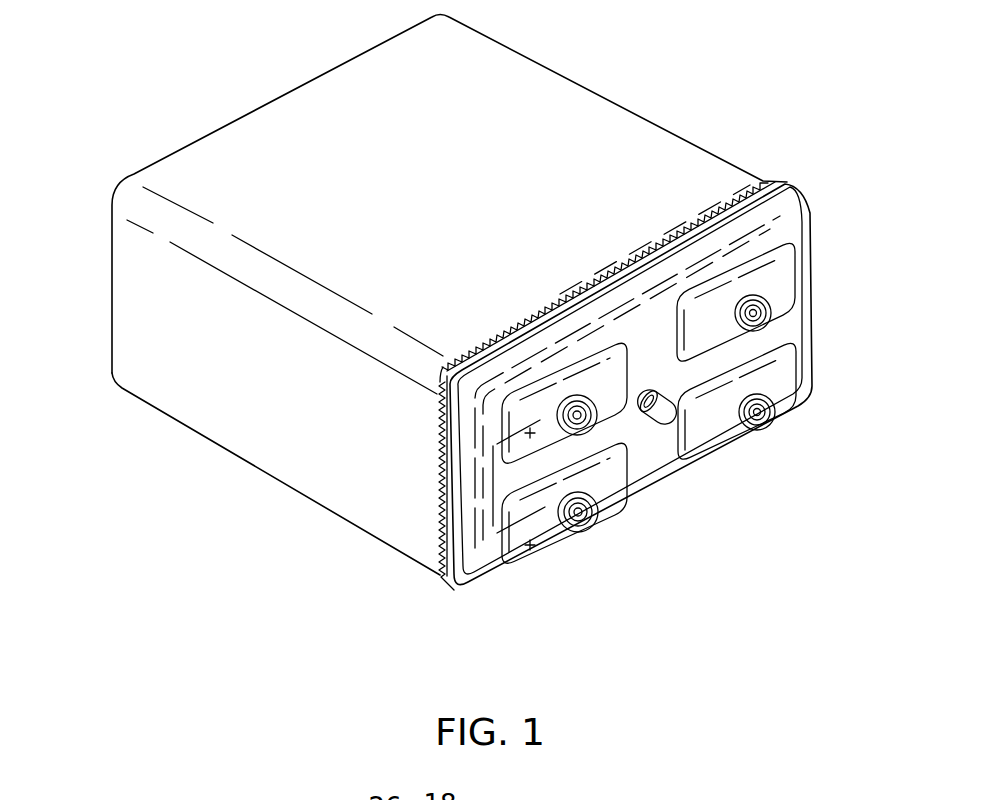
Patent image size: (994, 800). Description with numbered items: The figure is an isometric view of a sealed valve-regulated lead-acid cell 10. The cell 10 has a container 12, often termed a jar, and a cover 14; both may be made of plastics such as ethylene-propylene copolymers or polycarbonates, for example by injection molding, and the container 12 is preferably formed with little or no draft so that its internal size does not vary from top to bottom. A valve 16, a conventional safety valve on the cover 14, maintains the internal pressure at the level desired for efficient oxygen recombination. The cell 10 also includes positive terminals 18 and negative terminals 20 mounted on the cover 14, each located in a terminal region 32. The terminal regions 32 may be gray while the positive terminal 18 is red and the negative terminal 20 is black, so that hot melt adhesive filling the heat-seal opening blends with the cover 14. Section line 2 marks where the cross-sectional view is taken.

The sealed VRLA cell 10 is at (158, 56).
The container 12 is at (471, 197).
The cover 14 is at (658, 478).
The valve 16 is at (667, 413).
The positive terminals 18 is at (550, 430).
The negative terminals 20 is at (748, 310).
The terminal regions 32 is at (787, 392).
The section line 2- 2 is at (495, 305).